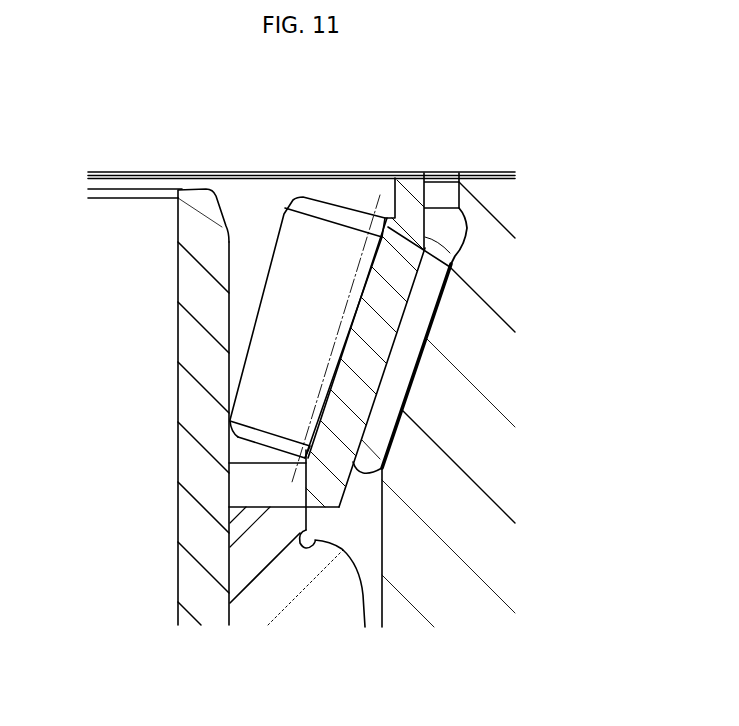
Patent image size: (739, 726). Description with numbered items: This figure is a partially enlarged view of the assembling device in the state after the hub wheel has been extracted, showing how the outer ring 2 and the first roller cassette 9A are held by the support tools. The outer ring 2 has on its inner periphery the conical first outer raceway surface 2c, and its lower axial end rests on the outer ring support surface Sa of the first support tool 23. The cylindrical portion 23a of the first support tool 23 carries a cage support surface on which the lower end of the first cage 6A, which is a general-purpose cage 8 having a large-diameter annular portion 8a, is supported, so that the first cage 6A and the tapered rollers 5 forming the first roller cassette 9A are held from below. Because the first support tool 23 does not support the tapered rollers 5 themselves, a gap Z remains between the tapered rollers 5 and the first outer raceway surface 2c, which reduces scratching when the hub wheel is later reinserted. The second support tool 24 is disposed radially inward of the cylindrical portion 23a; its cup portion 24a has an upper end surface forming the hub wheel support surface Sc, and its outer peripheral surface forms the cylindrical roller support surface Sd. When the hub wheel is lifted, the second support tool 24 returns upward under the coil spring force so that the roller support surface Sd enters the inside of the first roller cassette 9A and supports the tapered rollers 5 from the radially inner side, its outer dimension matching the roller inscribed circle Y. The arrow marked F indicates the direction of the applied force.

The outer ring 2 is at (458, 400).
The first outer raceway surface 2c is at (433, 321).
The tapered roller 5 is at (260, 306).
The general-purpose cage 8 is at (450, 330).
The first cage 6A is at (378, 330).
The large-diameter annular portion 8a is at (426, 225).
The first roller cassette 9A is at (390, 385).
The gap Z is at (423, 362).
The first support tool 23 is at (297, 590).
The cylindrical portion 23a is at (258, 593).
The second support tool 24 is at (192, 378).
The cup portion 24a is at (203, 586).
The outer ring support surface Sa is at (260, 507).
The hub wheel support surface Sc is at (199, 188).
The roller support surface Sd is at (230, 311).
The roller inscribed circle Y is at (230, 422).
The force direction F is at (301, 137).